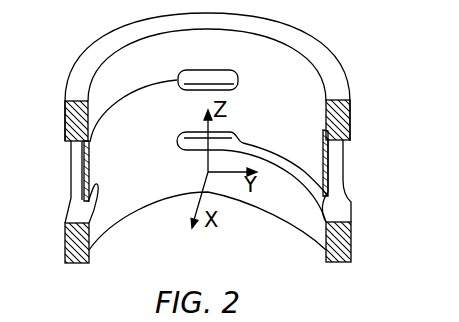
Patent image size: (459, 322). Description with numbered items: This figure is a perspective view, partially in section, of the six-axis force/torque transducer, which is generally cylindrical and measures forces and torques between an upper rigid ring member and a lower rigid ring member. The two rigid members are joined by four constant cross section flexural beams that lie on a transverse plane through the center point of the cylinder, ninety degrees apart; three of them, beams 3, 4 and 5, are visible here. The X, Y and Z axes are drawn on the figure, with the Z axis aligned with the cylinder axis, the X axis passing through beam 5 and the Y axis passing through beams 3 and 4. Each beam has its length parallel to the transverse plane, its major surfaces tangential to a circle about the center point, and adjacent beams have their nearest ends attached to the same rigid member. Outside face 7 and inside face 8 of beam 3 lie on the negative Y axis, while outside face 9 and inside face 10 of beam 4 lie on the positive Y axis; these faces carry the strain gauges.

The flexural beam 3 is at (94, 164).
The flexural beam 4 is at (317, 155).
The flexural beam 5 is at (200, 98).
The outside face 7 is at (84, 170).
The inside face 8 is at (95, 176).
The outside face 9 is at (329, 173).
The inside face 10 is at (327, 165).